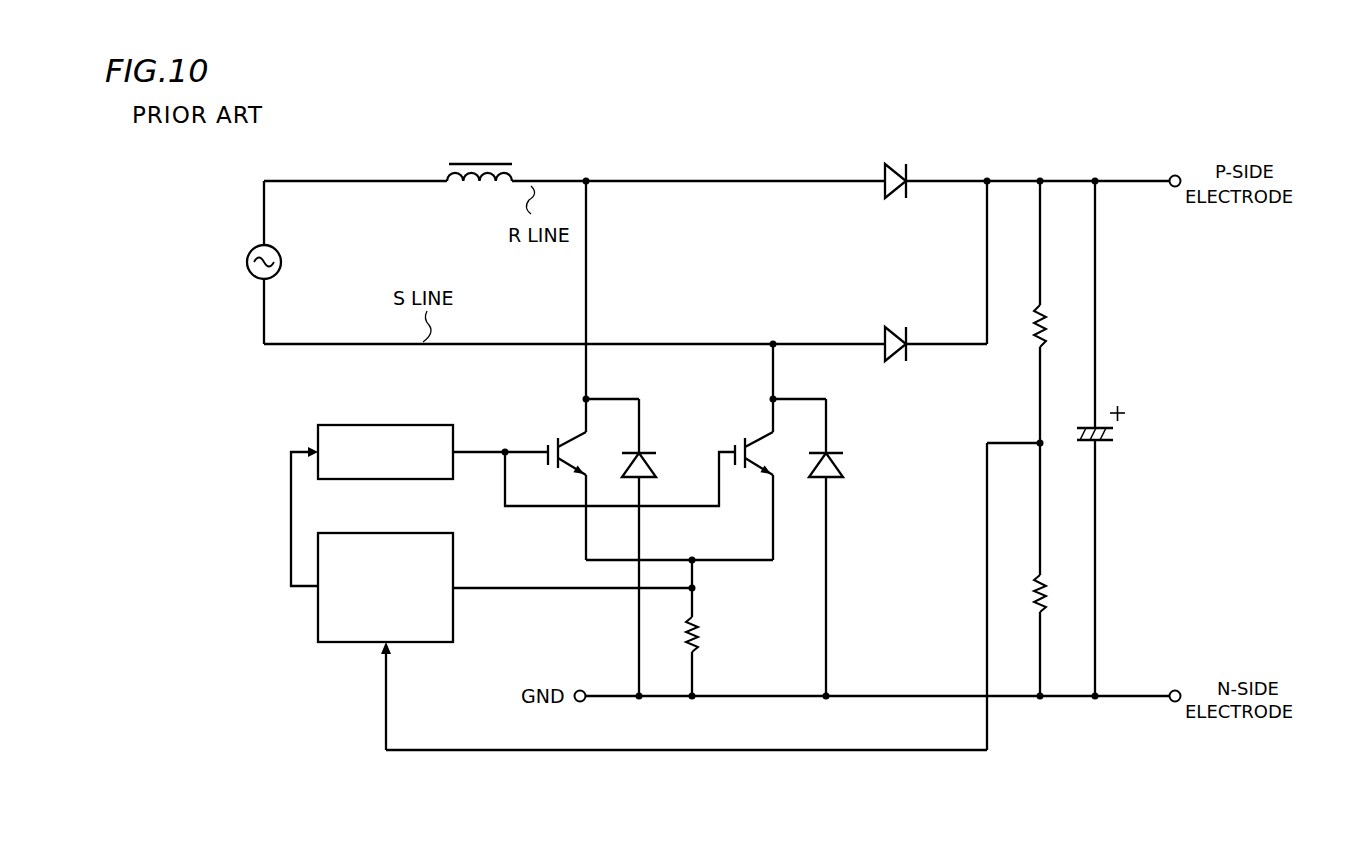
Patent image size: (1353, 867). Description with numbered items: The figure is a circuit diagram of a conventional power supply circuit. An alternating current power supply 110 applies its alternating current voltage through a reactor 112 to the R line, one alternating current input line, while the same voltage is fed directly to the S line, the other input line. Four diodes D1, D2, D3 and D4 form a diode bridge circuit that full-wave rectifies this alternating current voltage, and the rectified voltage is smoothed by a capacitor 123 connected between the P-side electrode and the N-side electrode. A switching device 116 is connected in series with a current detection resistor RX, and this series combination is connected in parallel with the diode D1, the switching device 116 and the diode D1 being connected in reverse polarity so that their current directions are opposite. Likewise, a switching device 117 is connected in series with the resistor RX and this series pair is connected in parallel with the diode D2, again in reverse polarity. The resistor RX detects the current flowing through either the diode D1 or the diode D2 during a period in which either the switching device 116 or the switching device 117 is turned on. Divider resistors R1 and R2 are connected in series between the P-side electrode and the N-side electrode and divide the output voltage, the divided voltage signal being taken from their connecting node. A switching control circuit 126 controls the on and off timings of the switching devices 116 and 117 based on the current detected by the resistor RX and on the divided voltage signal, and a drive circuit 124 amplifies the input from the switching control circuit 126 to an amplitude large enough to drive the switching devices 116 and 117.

The alternating current power supply 110 is at (279, 248).
The reactor 112 is at (492, 164).
The switching device 116 is at (575, 434).
The switching device 117 is at (762, 434).
The capacitor 123 is at (1105, 445).
The drive circuit 124 is at (430, 425).
The switching control circuit 126 is at (430, 533).
The diode D1 is at (642, 452).
The diode D2 is at (829, 452).
The diode D3 is at (912, 173).
The diode D4 is at (912, 336).
The divider resistor R1 is at (1055, 326).
The divider resistor R2 is at (1055, 593).
The resistor RX is at (707, 634).